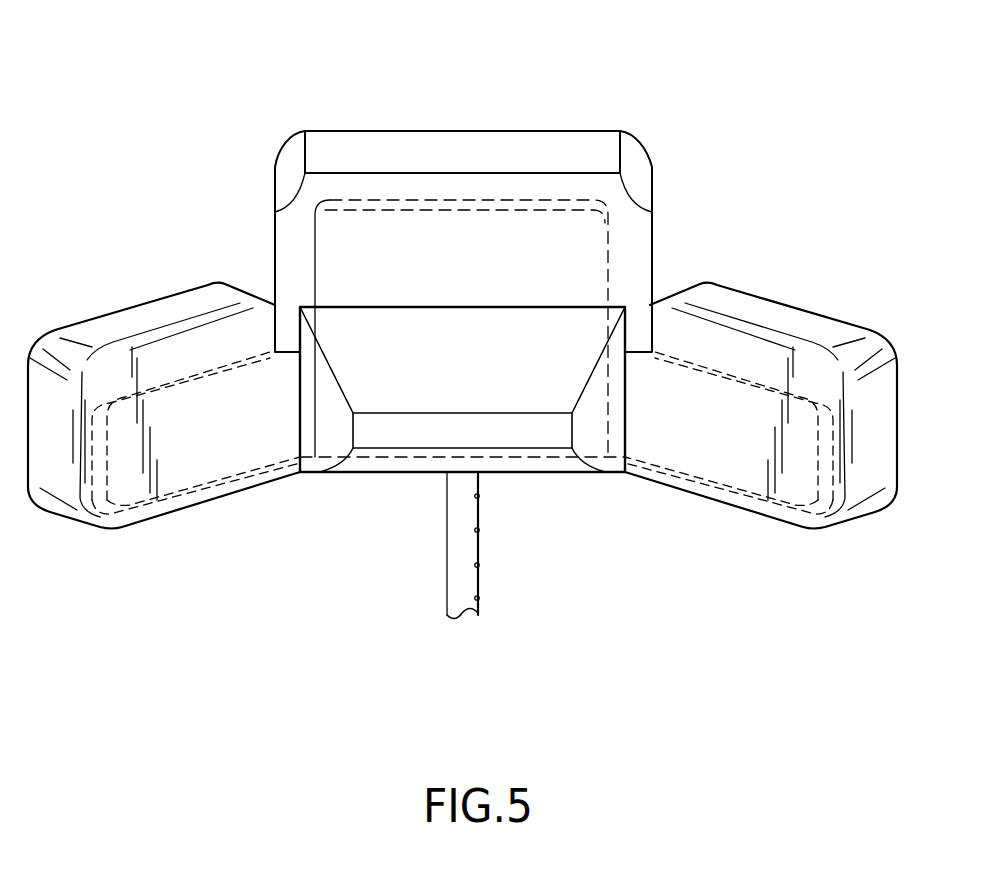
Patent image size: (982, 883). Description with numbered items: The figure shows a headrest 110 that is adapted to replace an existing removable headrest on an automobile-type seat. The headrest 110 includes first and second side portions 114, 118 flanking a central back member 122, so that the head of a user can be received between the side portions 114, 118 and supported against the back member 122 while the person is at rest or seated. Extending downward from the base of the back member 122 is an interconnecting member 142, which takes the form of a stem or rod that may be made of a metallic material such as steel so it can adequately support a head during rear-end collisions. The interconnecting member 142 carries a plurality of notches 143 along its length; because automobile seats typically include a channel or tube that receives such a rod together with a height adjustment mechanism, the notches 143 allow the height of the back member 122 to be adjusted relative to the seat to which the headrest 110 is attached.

The headrest 110 is at (206, 124).
The first side portion 114 is at (182, 295).
The second side portion 118 is at (710, 370).
The back member 122 is at (503, 277).
The interconnecting member 142 is at (447, 542).
The notches 143 is at (479, 496).